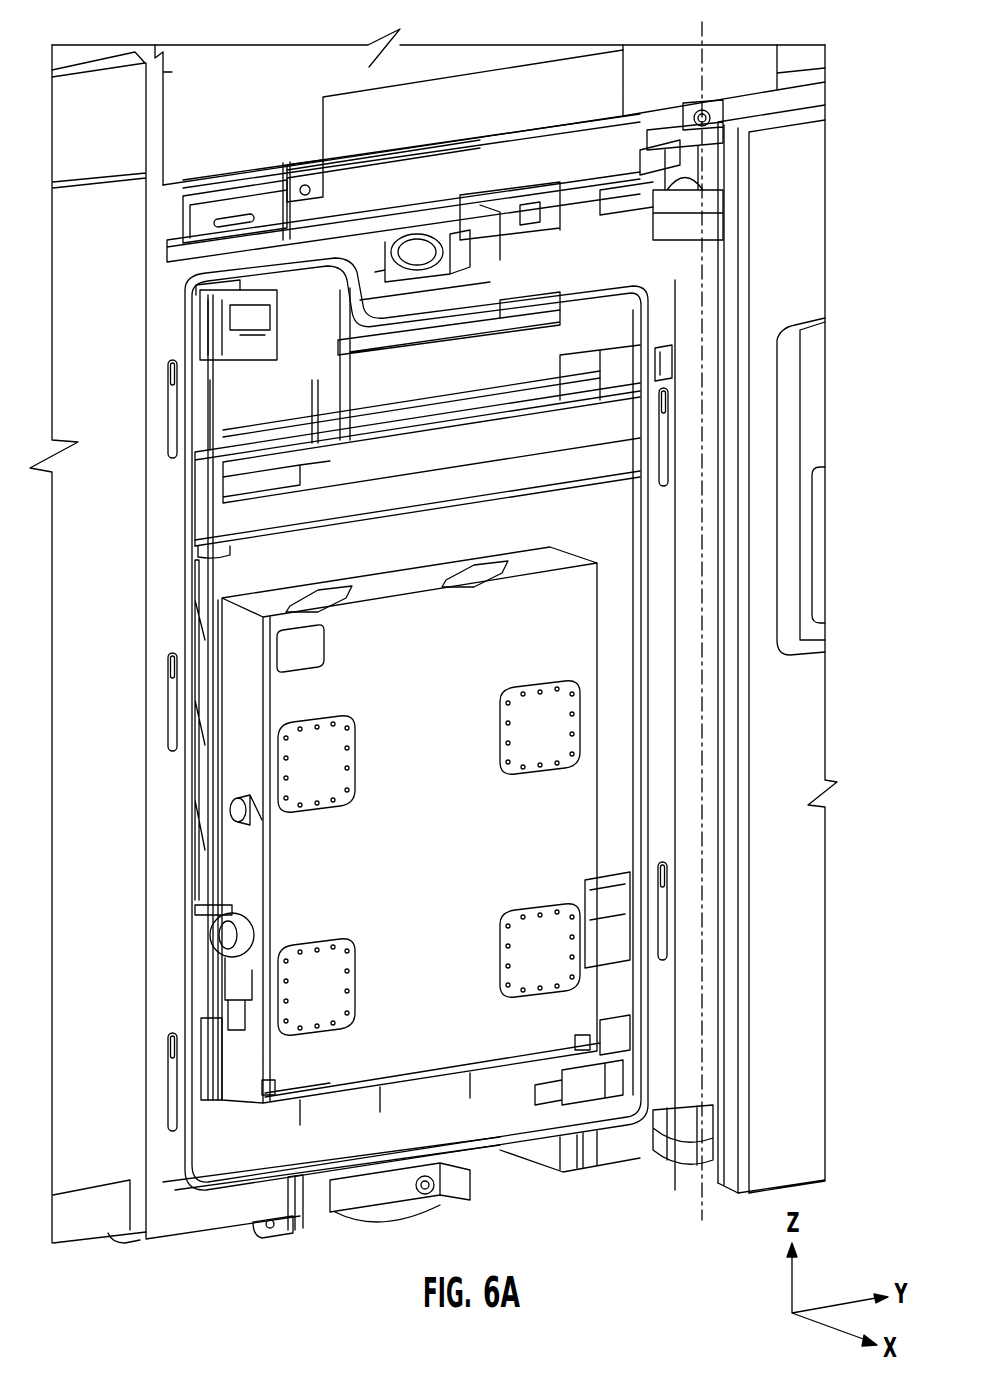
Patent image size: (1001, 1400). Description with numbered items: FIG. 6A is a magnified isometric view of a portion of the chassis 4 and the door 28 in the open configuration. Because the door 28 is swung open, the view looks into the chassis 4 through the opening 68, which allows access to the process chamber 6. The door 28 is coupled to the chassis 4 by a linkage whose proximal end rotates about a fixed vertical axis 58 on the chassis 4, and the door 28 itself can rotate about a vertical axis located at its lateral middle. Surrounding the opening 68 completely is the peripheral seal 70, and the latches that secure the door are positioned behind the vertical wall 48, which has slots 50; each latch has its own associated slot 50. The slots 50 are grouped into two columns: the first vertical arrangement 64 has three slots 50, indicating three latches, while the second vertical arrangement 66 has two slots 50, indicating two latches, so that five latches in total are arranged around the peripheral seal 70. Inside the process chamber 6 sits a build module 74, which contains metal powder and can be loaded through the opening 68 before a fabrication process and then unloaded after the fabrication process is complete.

The chassis 4 is at (253, 127).
The process chamber 6 is at (612, 530).
The door 28 is at (805, 217).
The vertical wall 48 is at (158, 335).
The slots 50 is at (172, 420).
The fixed vertical axis 58 is at (727, 180).
The first vertical arrangement 64 is at (173, 335).
The second vertical arrangement 66 is at (658, 322).
The opening 68 is at (200, 812).
The peripheral seal 70 is at (186, 496).
The build module 74 is at (305, 877).